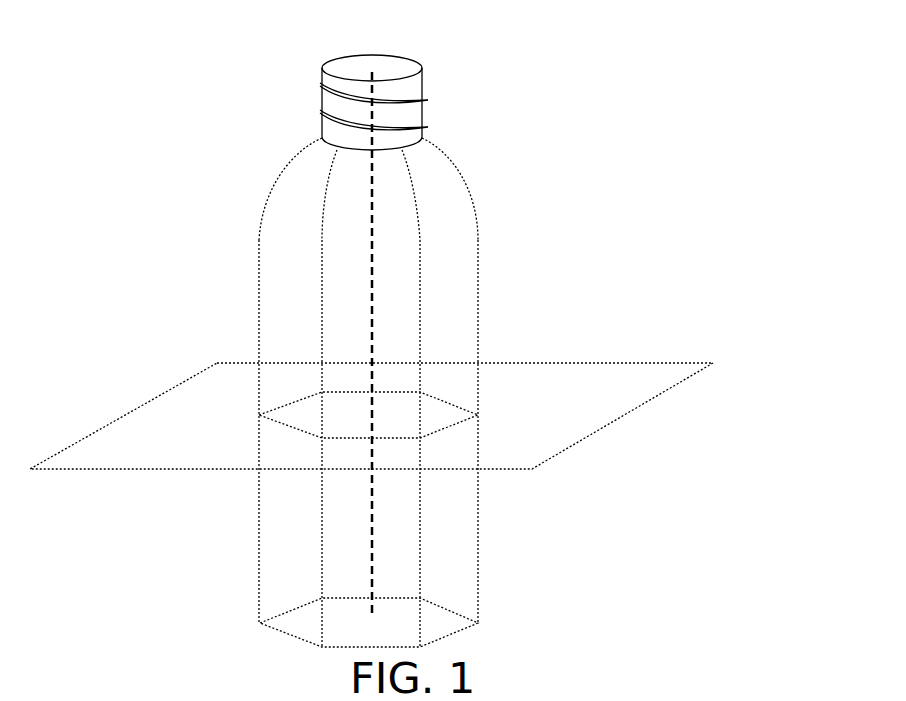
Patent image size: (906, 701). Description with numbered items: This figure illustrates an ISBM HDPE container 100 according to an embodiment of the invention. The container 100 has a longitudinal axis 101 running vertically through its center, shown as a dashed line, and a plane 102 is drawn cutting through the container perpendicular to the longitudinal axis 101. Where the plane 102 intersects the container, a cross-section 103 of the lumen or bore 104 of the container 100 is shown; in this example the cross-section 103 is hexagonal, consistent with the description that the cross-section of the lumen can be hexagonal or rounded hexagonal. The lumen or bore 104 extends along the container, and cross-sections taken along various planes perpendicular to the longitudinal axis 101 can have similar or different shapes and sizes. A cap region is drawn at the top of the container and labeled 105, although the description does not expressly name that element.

The ISBM container 100 is at (526, 123).
The longitudinal axis 101 is at (372, 327).
The plane 102 is at (668, 388).
The cross-section of the lumen or bore 103 is at (282, 401).
The lumen or bore 104 is at (340, 502).
The cap 105 is at (323, 98).